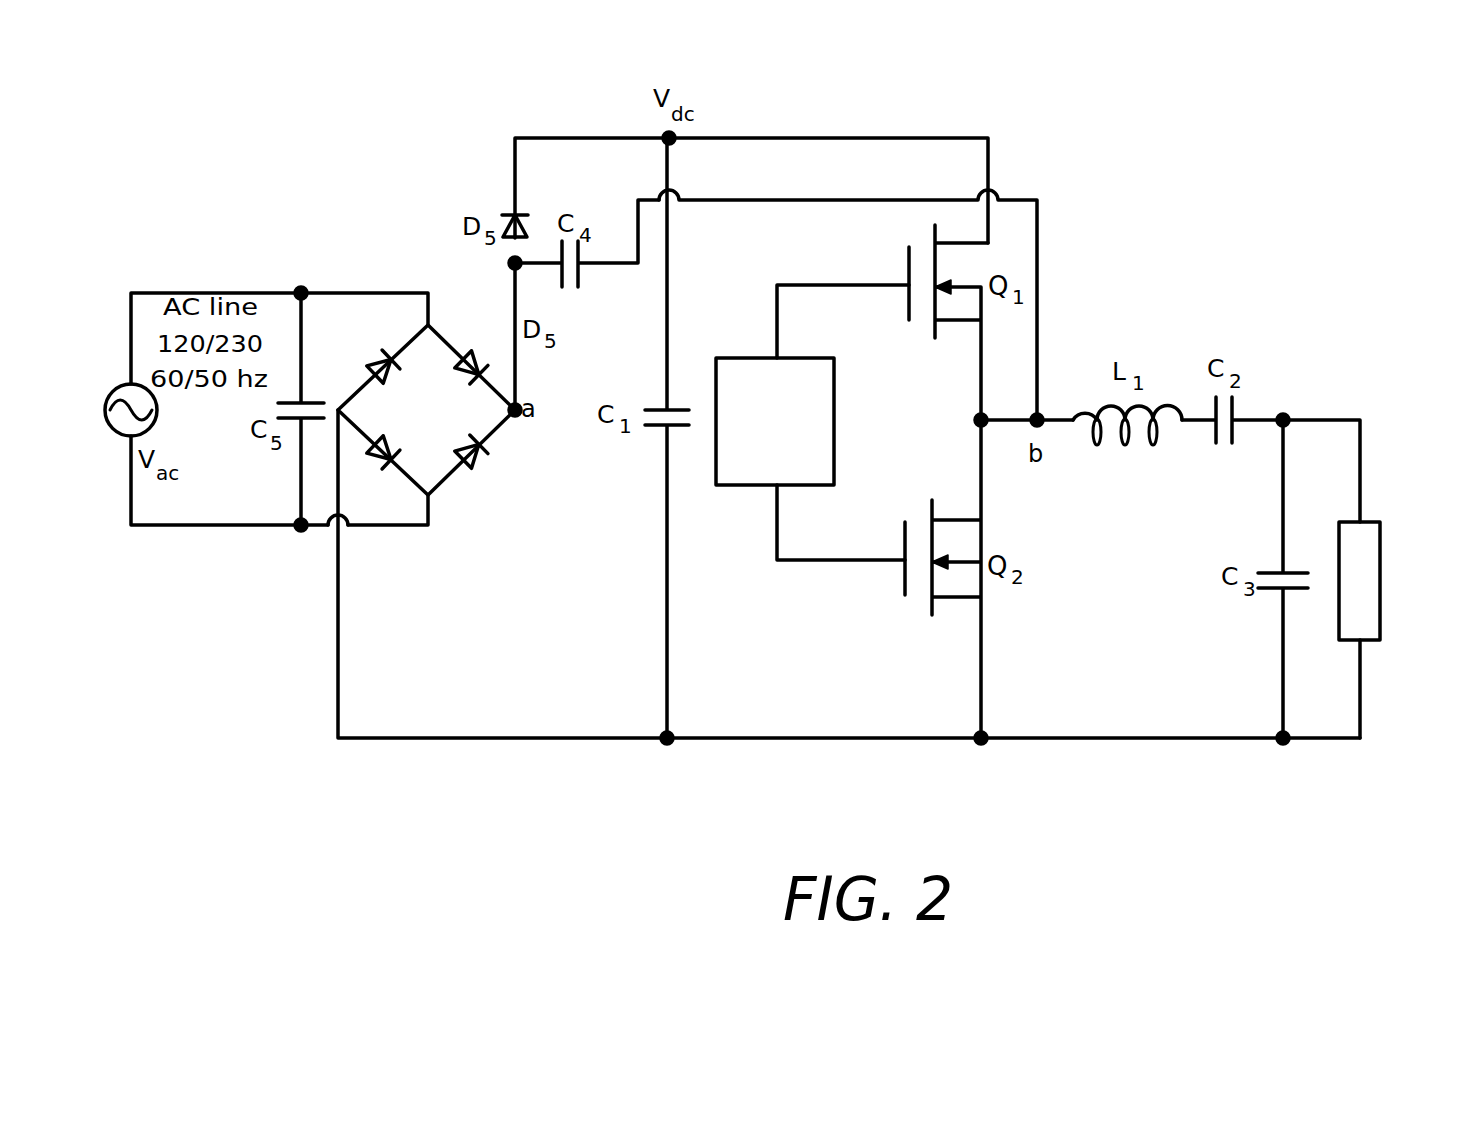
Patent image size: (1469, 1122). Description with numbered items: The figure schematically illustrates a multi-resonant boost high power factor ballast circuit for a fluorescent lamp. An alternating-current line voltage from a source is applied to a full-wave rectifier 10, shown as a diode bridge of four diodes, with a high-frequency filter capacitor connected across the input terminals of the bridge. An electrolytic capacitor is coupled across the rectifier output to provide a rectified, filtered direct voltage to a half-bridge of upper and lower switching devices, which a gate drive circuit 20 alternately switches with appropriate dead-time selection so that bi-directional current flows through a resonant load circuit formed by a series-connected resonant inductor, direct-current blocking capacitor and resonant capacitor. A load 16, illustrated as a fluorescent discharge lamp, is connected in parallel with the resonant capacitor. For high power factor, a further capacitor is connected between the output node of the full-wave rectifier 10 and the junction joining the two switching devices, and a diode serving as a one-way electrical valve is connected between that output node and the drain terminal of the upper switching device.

The full-wave rectifier 10 is at (424, 282).
The gate drive circuit 20 is at (760, 486).
The load 16 is at (1381, 541).